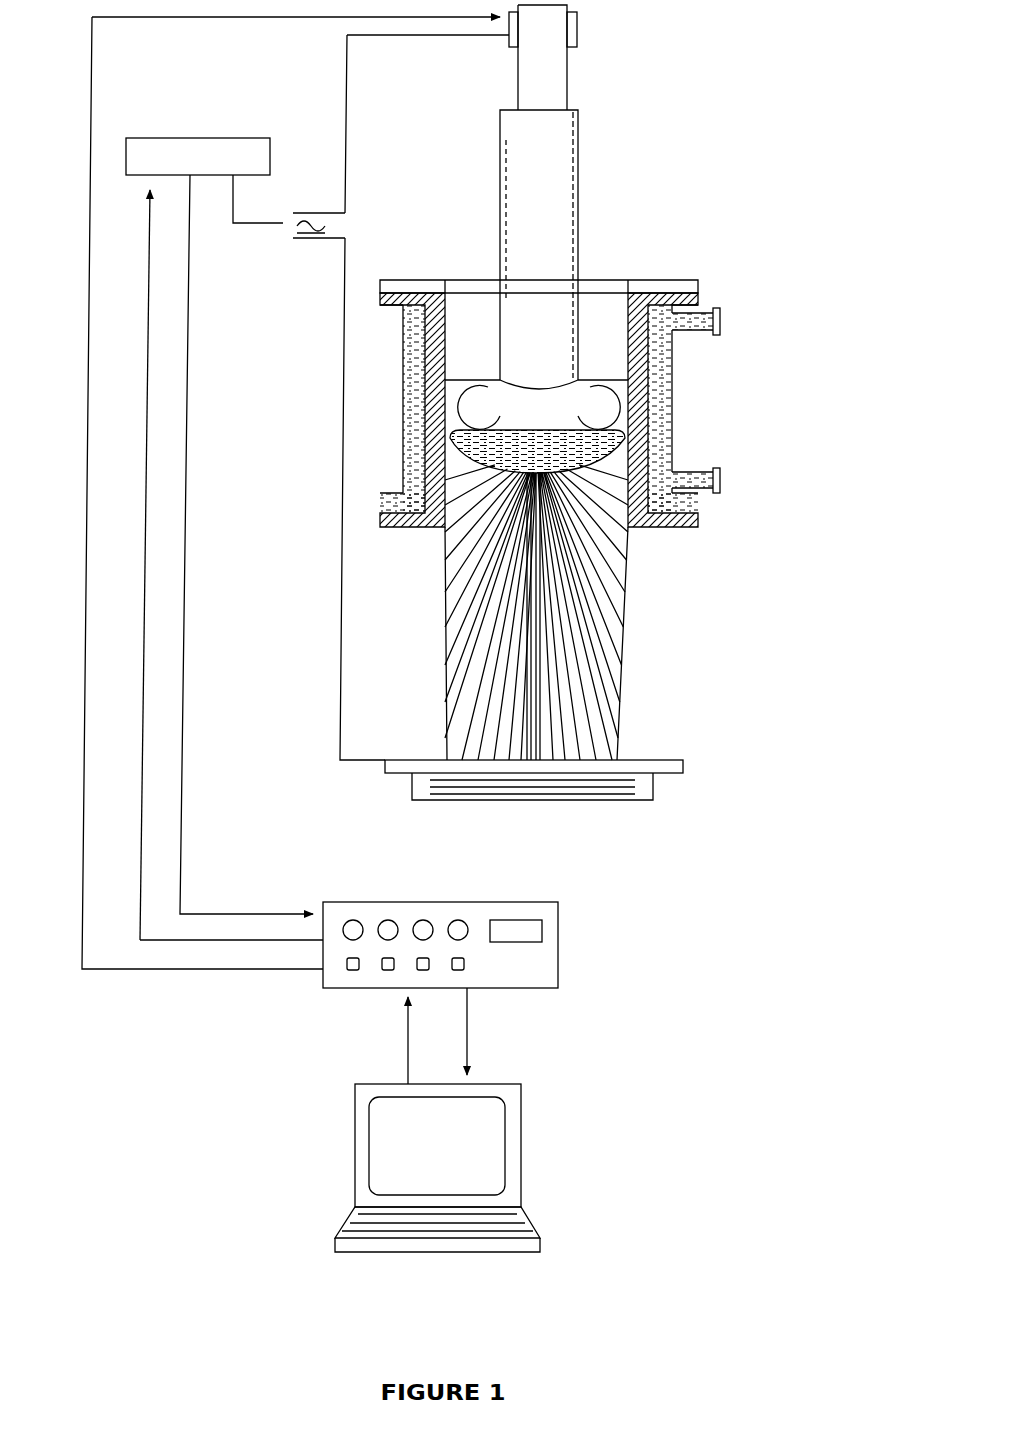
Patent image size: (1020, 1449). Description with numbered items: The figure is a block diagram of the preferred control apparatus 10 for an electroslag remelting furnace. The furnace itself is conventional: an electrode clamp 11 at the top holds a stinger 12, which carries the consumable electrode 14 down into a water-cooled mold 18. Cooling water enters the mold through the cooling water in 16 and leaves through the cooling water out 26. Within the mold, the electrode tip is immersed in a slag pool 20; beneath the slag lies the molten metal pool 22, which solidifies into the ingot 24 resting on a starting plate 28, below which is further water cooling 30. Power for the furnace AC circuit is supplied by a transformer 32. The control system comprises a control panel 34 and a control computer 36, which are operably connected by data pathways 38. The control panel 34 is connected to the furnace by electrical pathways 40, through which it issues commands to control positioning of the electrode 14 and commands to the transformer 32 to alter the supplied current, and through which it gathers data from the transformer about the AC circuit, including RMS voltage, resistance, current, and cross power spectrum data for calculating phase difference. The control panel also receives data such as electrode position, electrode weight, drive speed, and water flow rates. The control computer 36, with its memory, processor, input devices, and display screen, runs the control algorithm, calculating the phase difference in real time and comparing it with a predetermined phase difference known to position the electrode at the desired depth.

The apparatus 10 is at (730, 148).
The electrode clamp 11 is at (578, 30).
The stinger 12 is at (562, 85).
The electrode 14 is at (575, 190).
The cooling water in 16 is at (718, 313).
The mold 18 is at (650, 362).
The slag pool 20 is at (602, 412).
The molten metal pool 22 is at (650, 443).
The ingot 24 is at (595, 553).
The cooling water out 26 is at (720, 482).
The starting plate 28 is at (663, 767).
The water cooling 30 is at (648, 788).
The transformer 32 is at (196, 138).
The control panel 34 is at (563, 933).
The control computer 36 is at (515, 1120).
The data pathways 38 is at (467, 1053).
The electrical pathways 40 is at (247, 914).